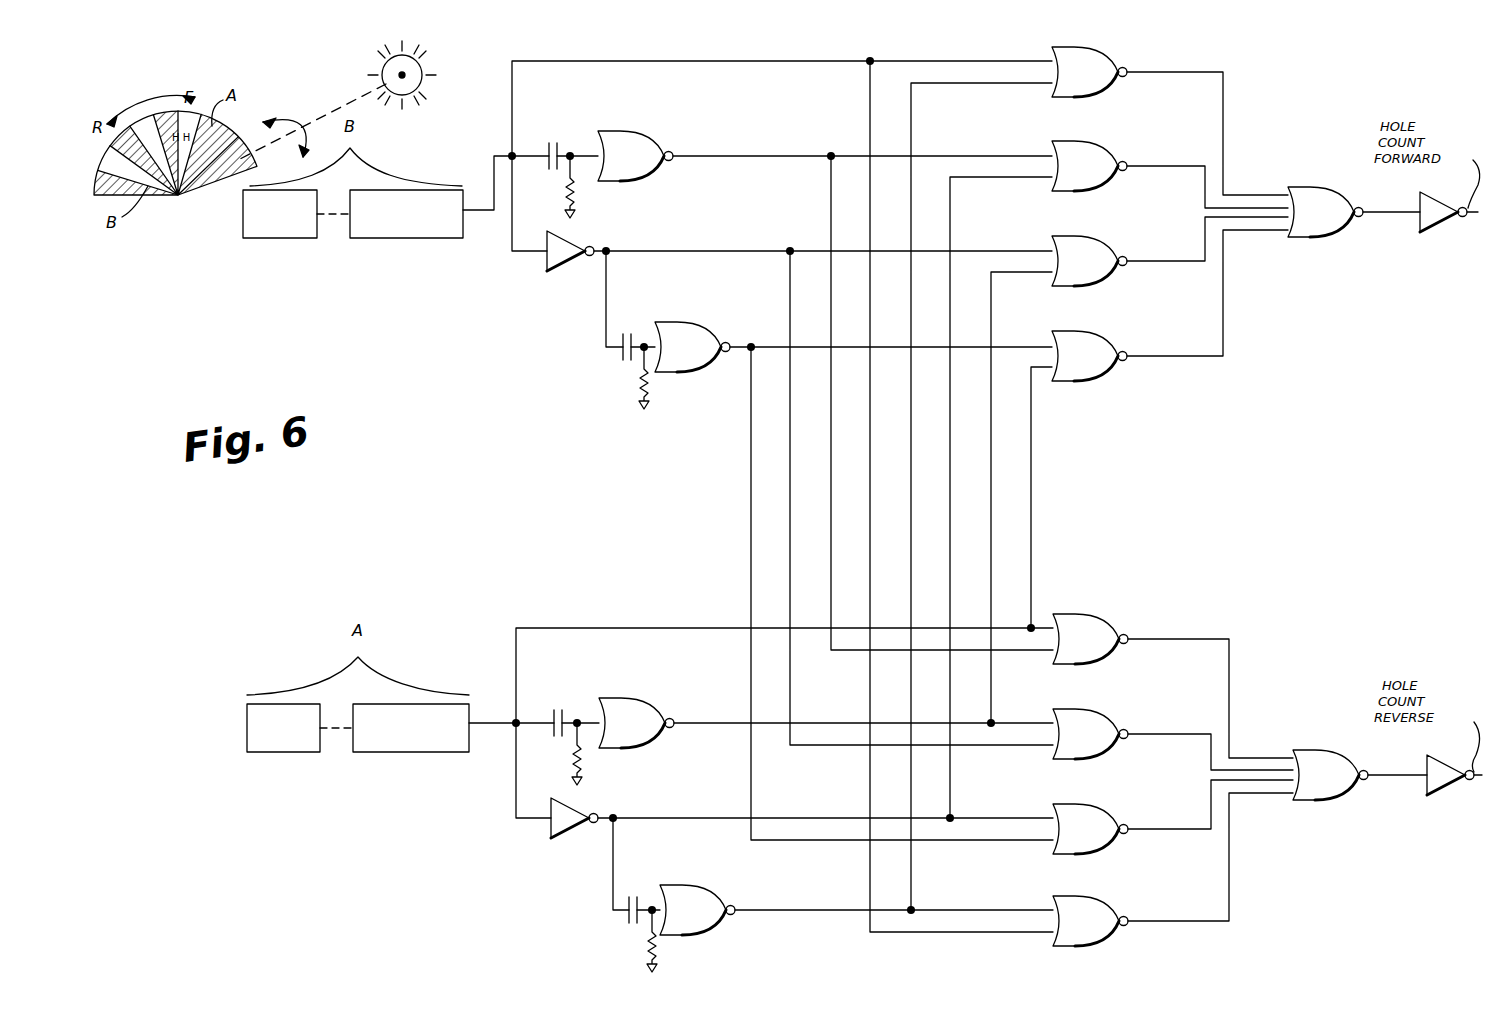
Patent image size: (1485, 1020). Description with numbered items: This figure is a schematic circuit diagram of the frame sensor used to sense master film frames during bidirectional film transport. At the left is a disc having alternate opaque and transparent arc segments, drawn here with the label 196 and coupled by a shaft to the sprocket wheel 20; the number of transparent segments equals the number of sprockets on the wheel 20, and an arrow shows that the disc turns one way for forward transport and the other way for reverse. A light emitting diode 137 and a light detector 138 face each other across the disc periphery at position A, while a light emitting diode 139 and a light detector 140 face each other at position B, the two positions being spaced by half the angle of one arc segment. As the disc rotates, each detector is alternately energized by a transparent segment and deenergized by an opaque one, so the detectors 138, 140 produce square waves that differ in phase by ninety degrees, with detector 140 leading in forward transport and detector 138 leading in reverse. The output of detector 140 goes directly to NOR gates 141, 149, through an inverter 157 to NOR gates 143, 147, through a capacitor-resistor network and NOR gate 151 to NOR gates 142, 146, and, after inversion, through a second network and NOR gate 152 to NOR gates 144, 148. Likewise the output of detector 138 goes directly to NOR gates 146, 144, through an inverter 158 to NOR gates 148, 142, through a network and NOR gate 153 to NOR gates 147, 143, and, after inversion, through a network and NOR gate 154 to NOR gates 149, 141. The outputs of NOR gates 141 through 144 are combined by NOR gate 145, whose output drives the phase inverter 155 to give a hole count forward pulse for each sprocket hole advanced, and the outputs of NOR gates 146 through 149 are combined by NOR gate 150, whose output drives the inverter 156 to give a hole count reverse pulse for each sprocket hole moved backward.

The sprocket wheel 20 is at (423, 70).
The rotation direction arrow 196 is at (285, 124).
The light emitting diode 137 is at (300, 753).
The light detector 138 is at (424, 753).
The light emitting diode 139 is at (298, 239).
The light detector 140 is at (416, 239).
The NOR gate 141 is at (1112, 66).
The NOR gate 142 is at (1100, 150).
The NOR gate 143 is at (1096, 244).
The NOR gate 144 is at (1102, 336).
The NOR gate 145 is at (1322, 240).
The NOR gate 146 is at (1104, 620).
The NOR gate 147 is at (1106, 714).
The NOR gate 148 is at (1106, 808).
The NOR gate 149 is at (1106, 900).
The NOR gate 150 is at (1326, 802).
The NOR gate 151 is at (638, 132).
The NOR gate 152 is at (748, 290).
The NOR gate 153 is at (642, 700).
The NOR gate 154 is at (706, 928).
The phase inverter 155 is at (1432, 226).
The inverter 156 is at (1440, 796).
The inverter 157 is at (568, 270).
The inverter 158 is at (572, 840).